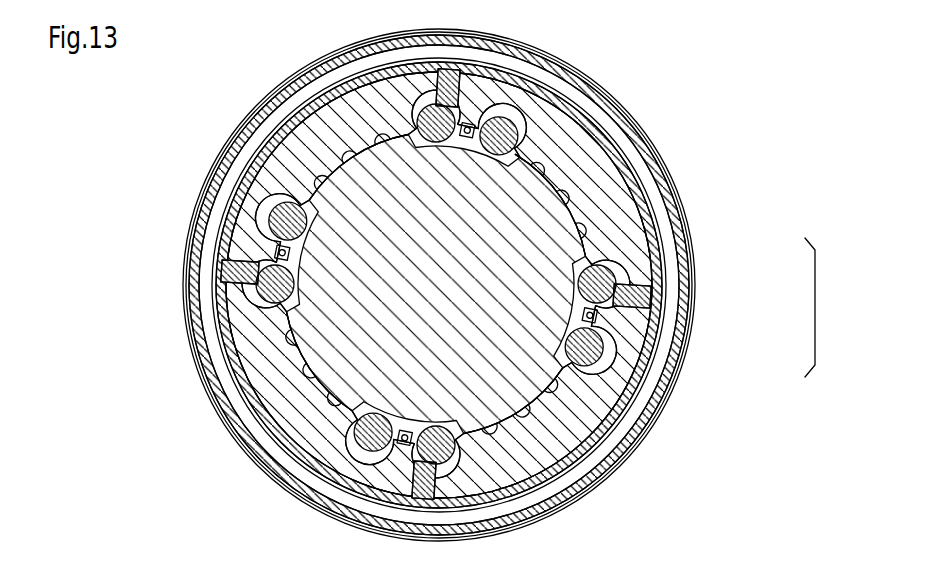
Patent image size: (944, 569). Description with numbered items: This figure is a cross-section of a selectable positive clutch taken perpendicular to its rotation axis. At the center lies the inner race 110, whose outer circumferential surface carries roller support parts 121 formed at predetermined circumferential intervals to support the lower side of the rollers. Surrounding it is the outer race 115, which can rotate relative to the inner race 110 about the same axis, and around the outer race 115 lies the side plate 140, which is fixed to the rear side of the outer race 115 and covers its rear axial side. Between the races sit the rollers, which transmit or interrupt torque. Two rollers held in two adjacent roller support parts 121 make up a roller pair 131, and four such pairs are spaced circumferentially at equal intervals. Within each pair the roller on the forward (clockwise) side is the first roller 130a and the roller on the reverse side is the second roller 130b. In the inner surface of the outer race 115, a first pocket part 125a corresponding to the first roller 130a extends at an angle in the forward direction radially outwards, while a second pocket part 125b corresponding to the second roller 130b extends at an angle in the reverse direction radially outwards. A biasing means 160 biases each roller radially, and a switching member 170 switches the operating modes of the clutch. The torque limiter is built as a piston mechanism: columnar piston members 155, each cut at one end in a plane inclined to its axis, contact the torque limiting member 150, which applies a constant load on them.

The inner race 110 is at (375, 364).
The outer race 115 is at (286, 158).
The roller support part 121 is at (303, 341).
The first pocket part 125a is at (653, 393).
The second pocket part 125b is at (636, 234).
The first roller 130a is at (613, 347).
The second roller 130b is at (611, 271).
The roller pair 131 is at (827, 307).
The side plate 140 is at (265, 93).
The torque limiting member 150 is at (617, 150).
The piston member 155 is at (615, 304).
The biasing means 160 is at (481, 125).
The switching member 170 is at (273, 248).